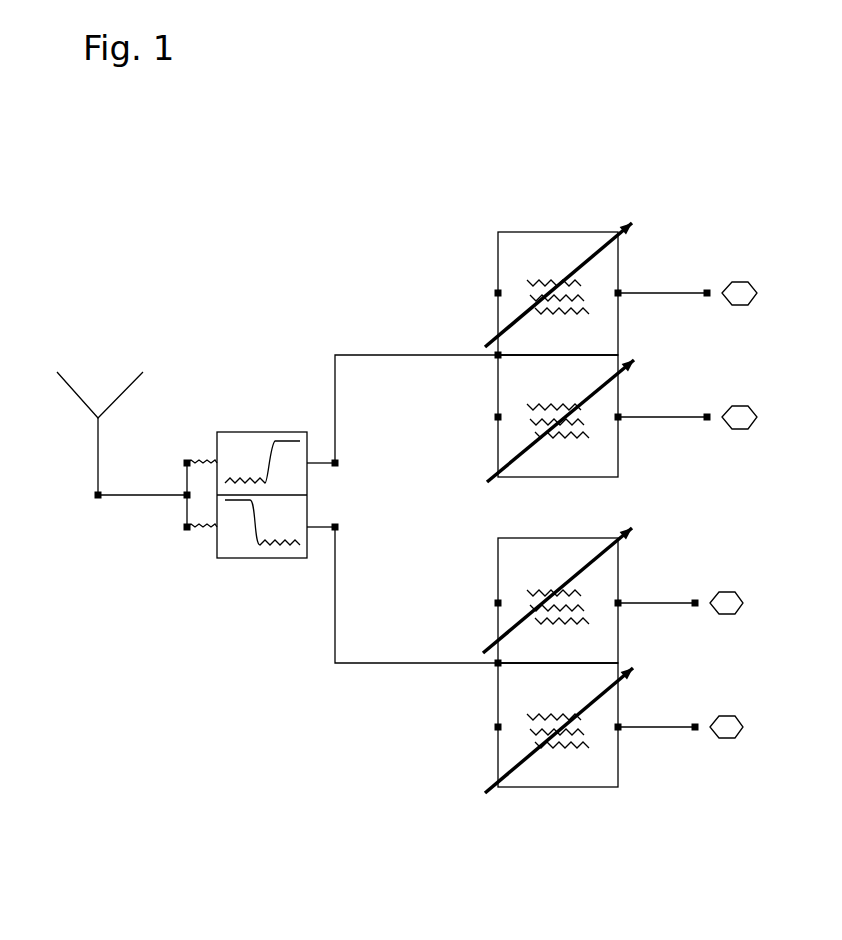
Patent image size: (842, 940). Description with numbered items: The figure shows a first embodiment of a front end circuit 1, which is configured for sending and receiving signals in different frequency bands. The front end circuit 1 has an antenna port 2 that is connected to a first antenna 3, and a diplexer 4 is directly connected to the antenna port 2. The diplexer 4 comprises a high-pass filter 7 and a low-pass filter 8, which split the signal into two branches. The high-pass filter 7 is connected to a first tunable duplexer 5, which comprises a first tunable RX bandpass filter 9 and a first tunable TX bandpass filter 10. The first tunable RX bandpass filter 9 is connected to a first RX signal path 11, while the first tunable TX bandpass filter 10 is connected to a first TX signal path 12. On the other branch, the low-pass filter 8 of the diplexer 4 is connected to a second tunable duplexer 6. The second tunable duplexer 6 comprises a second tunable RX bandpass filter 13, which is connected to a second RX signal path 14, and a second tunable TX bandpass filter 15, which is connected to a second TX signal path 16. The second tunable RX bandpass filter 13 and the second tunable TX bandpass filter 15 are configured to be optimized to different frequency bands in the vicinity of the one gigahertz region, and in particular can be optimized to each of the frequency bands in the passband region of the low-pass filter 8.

The front end circuit 1 is at (283, 268).
The antenna port 2 is at (98, 500).
The first antenna 3 is at (98, 440).
The diplexer 4 is at (261, 488).
The first tunable duplexer 5 is at (524, 299).
The second tunable duplexer 6 is at (521, 716).
The high-pass filter 7 is at (237, 445).
The low-pass filter 8 is at (233, 548).
The first tunable RX bandpass filter 9 is at (510, 248).
The first tunable TX bandpass filter 10 is at (508, 372).
The first RX signal path 11 is at (663, 292).
The first TX signal path 12 is at (677, 413).
The second tunable RX bandpass filter 13 is at (512, 563).
The second RX signal path 14 is at (650, 600).
The second tunable TX bandpass filter 15 is at (512, 700).
The second TX signal path 16 is at (660, 723).